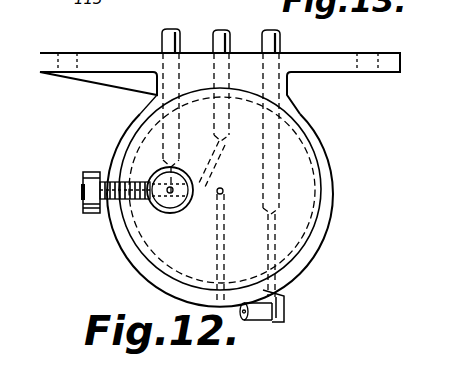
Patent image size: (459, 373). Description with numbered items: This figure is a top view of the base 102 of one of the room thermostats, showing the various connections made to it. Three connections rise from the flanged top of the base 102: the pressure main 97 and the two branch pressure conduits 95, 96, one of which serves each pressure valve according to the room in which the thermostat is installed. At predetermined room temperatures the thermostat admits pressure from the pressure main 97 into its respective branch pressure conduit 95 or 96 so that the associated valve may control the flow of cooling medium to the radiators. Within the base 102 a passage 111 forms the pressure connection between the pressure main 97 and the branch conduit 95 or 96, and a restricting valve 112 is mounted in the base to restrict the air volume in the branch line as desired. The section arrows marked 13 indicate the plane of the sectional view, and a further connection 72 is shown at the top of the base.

The section line 13- 13 is at (38, 189).
The tube 72 is at (280, 41).
The branch pressure conduit 95 is at (224, 31).
The branch pressure conduit 96 is at (228, 31).
The pressure main 97 is at (163, 30).
The base 102 is at (326, 136).
The passage 111 is at (186, 242).
The restricting valve 112 is at (88, 172).